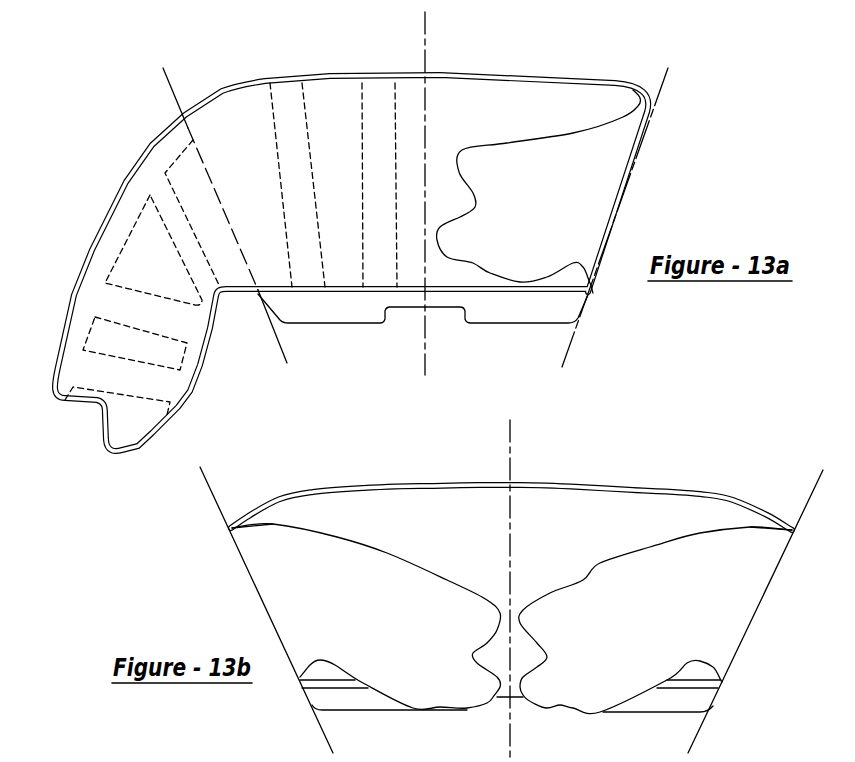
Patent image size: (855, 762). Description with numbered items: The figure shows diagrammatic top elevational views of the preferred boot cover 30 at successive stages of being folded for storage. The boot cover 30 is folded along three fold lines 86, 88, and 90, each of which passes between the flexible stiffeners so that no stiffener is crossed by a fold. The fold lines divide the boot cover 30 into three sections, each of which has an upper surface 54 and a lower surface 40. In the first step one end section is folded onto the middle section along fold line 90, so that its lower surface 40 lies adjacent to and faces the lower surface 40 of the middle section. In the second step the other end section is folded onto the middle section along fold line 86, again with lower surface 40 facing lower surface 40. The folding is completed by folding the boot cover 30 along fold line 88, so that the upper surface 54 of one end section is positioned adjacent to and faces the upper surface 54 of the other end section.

In FIG. 13A, the boot cover 30 is at (560, 74).
In FIG. 13B, the boot cover 30 is at (427, 480).
In FIG. 13A, the lower surface 40 is at (486, 119).
In FIG. 13B, the lower surface 40 is at (556, 540).
In FIG. 13A, the upper surface 54 is at (536, 207).
In FIG. 13B, the upper surface 54 is at (334, 613).
In FIG. 13A, the fold line 86 is at (168, 80).
In FIG. 13B, the fold line 86 is at (217, 494).
In FIG. 13A, the fold line 88 is at (425, 26).
In FIG. 13B, the fold line 88 is at (510, 443).
In FIG. 13A, the fold line 90 is at (665, 82).
In FIG. 13B, the fold line 90 is at (808, 497).